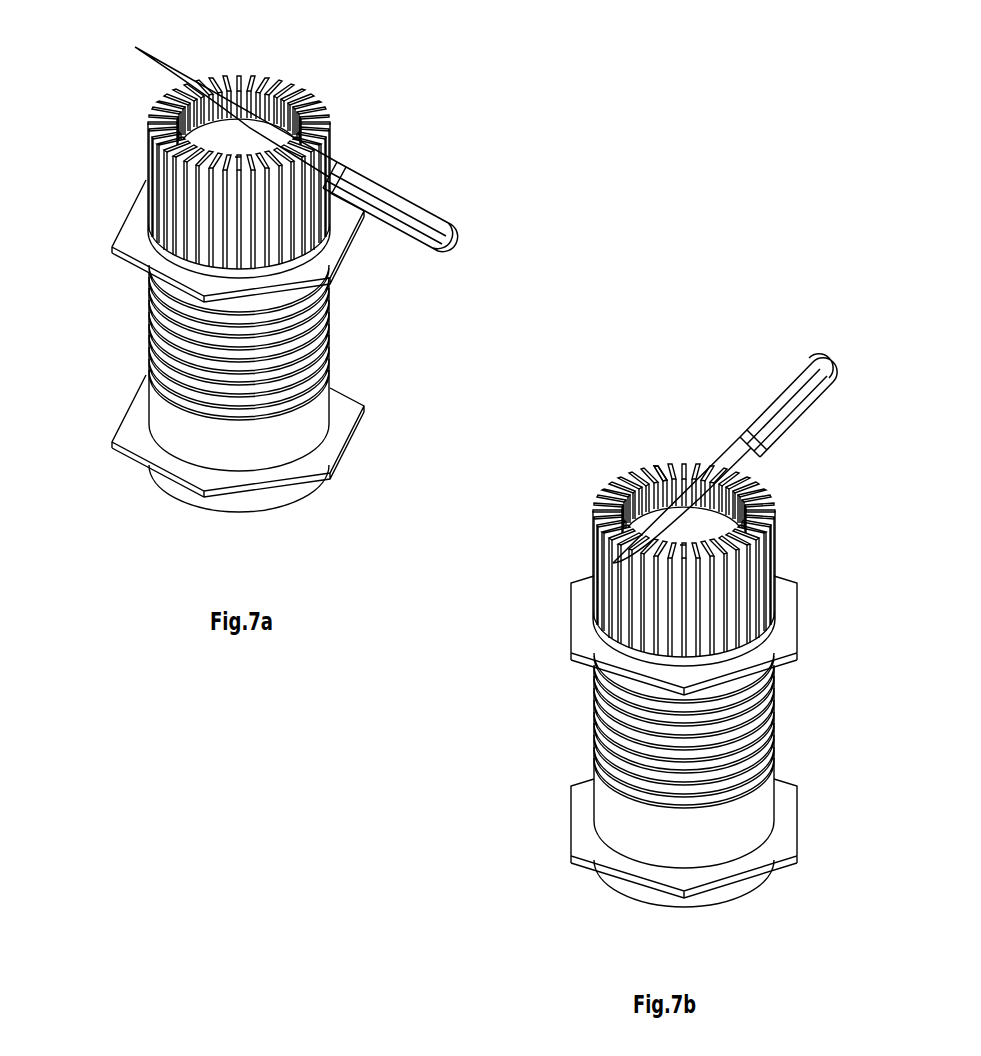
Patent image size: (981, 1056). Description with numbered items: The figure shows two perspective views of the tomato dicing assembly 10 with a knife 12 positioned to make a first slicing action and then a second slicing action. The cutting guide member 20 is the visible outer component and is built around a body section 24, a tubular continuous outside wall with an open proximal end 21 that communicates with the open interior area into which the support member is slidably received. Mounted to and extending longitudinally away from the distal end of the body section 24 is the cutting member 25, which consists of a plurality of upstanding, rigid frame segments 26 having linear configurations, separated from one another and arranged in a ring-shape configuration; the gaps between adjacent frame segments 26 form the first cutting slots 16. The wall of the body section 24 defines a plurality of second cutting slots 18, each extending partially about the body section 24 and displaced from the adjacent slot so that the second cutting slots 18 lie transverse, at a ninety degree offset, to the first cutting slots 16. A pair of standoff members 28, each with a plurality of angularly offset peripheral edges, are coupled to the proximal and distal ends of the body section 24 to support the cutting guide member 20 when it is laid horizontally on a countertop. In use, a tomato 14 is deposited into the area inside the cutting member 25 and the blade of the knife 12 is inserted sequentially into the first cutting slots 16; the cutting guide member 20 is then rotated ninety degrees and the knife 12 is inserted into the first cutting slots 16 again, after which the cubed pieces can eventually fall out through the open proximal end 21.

In FIG. 7A, the tomato dicing assembly 10 is at (314, 298).
In FIG. 7A, the knife 12 is at (422, 212).
In FIG. 7B, the knife 12 is at (757, 422).
In FIG. 7A, the tomato 14 is at (205, 147).
In FIG. 7B, the tomato 14 is at (737, 521).
In FIG. 7B, the first cutting slots 16 is at (713, 555).
In FIG. 7A, the second cutting slots 18 is at (303, 358).
In FIG. 7B, the second cutting slots 18 is at (612, 745).
In FIG. 7A, the cutting guide member 20 is at (233, 379).
In FIG. 7B, the cutting guide member 20 is at (721, 774).
In FIG. 7A, the open proximal end 21 is at (280, 502).
In FIG. 7B, the open proximal end 21 is at (730, 900).
In FIG. 7B, the body section 24 is at (737, 690).
In FIG. 7A, the cutting member 25 is at (271, 177).
In FIG. 7B, the cutting member 25 is at (752, 532).
In FIG. 7B, the frame segments 26 is at (644, 439).
In FIG. 7A, the standoff members 28 is at (338, 405).
In FIG. 7B, the standoff members 28 is at (787, 642).